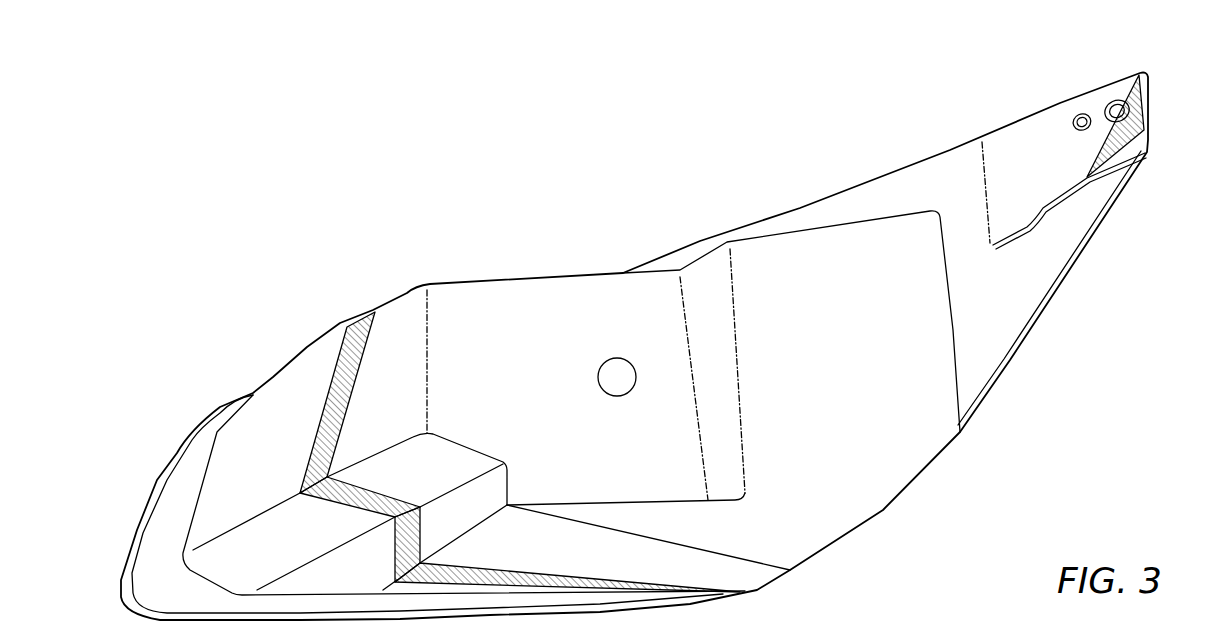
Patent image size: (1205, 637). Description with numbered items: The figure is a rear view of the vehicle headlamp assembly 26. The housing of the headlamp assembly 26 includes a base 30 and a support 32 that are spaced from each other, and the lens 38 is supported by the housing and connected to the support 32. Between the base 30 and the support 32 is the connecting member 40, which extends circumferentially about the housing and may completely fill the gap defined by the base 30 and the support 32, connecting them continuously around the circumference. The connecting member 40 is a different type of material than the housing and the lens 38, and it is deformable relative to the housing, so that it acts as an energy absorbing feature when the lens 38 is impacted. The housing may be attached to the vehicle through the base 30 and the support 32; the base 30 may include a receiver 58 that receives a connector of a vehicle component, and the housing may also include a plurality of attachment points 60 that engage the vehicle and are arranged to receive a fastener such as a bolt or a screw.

The vehicle headlamp assembly 26 is at (356, 185).
The base 30 is at (493, 313).
The support 32 is at (290, 378).
The lens 38 is at (157, 478).
The connecting member 40 is at (350, 360).
The receiver 58 is at (600, 380).
The attachment points 60 is at (1107, 105).